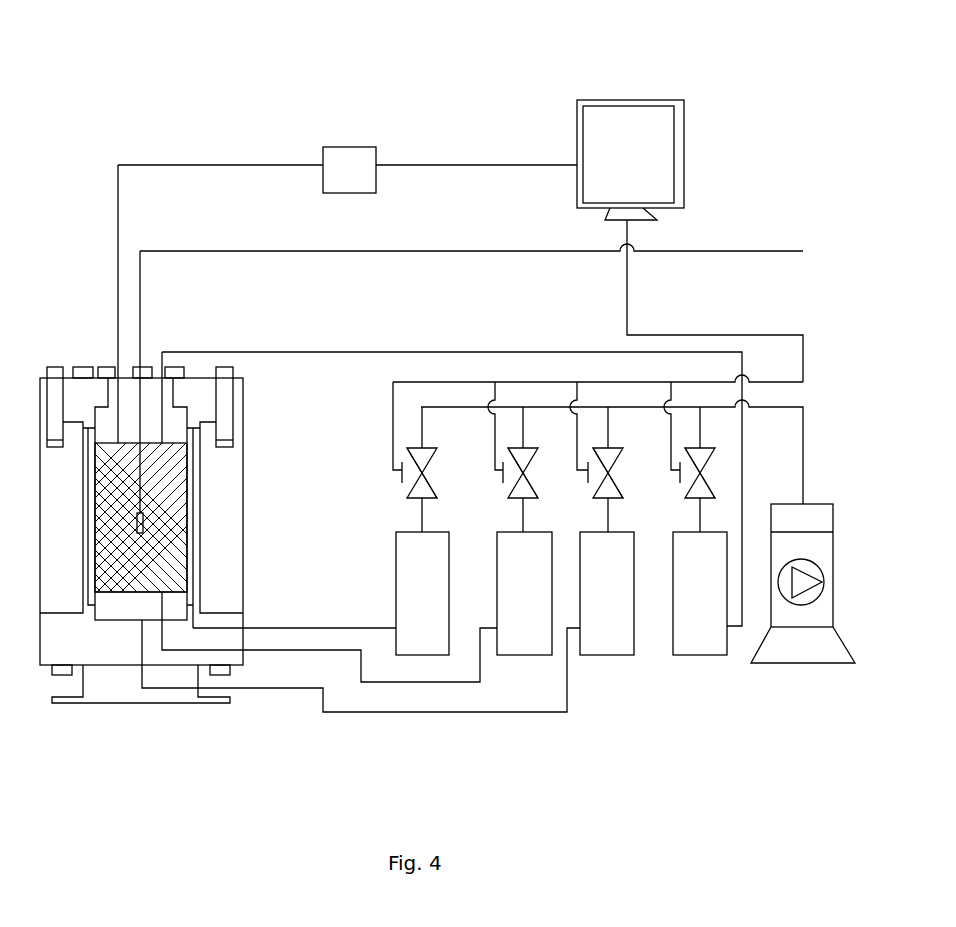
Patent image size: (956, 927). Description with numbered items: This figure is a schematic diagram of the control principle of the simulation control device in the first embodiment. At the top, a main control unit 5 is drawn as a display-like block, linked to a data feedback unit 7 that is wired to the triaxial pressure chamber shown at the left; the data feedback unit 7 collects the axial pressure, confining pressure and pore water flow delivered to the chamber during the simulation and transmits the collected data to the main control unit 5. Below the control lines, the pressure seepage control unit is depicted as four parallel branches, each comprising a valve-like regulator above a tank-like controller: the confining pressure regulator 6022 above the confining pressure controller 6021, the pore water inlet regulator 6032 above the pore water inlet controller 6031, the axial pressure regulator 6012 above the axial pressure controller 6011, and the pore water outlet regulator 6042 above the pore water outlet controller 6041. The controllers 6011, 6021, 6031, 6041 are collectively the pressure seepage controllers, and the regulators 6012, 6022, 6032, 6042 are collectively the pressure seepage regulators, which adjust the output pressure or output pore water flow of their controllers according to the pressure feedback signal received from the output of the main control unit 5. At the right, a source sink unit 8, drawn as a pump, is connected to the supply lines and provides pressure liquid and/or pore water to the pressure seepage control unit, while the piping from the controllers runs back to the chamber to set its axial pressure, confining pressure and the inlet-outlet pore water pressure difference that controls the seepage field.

The main control unit 5 is at (632, 137).
The data feedback unit 7 is at (352, 165).
The source sink unit 8 is at (798, 605).
The axial pressure controller 6011 is at (608, 567).
The axial pressure regulator 6012 is at (610, 470).
The confining pressure controller 6021 is at (420, 562).
The confining pressure regulator 6022 is at (430, 468).
The pore water inlet controller 6031 is at (518, 562).
The pore water inlet regulator 6032 is at (525, 470).
The pore water outlet controller 6041 is at (698, 615).
The pore water outlet regulator 6042 is at (700, 470).